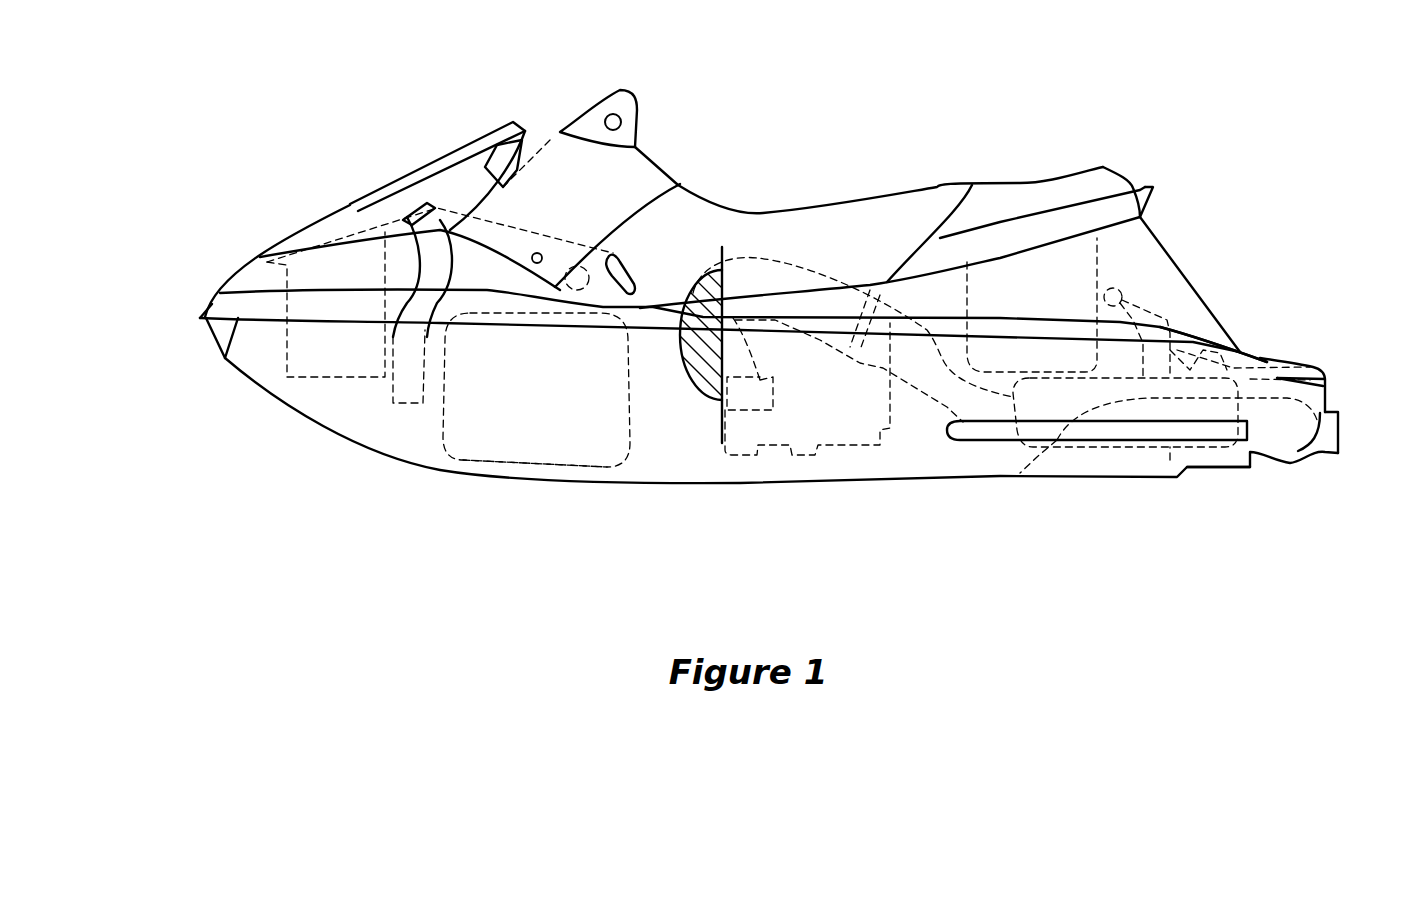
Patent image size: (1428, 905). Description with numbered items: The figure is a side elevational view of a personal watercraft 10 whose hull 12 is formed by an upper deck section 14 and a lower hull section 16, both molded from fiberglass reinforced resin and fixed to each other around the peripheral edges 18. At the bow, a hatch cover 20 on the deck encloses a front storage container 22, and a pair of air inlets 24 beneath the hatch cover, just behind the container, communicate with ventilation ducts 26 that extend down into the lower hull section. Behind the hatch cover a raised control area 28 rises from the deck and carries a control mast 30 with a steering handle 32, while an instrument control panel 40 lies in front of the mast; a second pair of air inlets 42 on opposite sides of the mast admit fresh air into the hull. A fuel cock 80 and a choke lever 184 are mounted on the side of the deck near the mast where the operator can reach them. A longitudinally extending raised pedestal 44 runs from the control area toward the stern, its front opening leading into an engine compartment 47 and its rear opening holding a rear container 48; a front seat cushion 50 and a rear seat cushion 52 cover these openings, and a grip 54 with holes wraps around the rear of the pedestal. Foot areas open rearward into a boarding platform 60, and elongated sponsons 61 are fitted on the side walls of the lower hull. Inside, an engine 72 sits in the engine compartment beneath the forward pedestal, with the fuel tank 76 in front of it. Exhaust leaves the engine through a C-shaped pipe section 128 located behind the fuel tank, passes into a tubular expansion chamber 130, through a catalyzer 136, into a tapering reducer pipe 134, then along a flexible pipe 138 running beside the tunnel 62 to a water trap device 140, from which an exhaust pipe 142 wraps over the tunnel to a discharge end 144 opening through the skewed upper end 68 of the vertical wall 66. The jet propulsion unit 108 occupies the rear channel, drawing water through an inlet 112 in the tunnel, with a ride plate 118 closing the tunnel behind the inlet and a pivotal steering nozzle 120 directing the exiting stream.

The personal watercraft 10 is at (1218, 128).
The hull 12 is at (198, 319).
The upper deck section 14 is at (395, 223).
The lower hull section 16 is at (343, 437).
The peripheral edges 18 is at (248, 310).
The hatch cover 20 is at (455, 173).
The front storage container 22 is at (295, 335).
The air inlets 24 is at (420, 207).
The ventilation ducts 26 is at (427, 373).
The raised control area 28 is at (645, 176).
The control mast 30 is at (625, 88).
The steering handle 32 is at (621, 122).
The instrument control panel 40 is at (520, 123).
The second pair of air inlets 42 is at (617, 294).
The raised pedestal 44 is at (1205, 297).
The engine compartment 47 is at (868, 474).
The rear container 48 is at (1100, 253).
The front seat cushion 50 is at (760, 210).
The rear seat cushion 52 is at (1023, 181).
The grip 54 is at (1142, 187).
The boarding platform 60 is at (1267, 350).
The sponsons 61 is at (962, 433).
The tunnel 62 is at (1040, 450).
The vertical wall 66 is at (1170, 460).
The upper end of channel front wall 68 is at (1218, 346).
The engine 72 is at (722, 427).
The fuel tank 76 is at (538, 470).
The fuel cock 80 is at (567, 292).
The jet propulsion unit 108 is at (1320, 470).
The inlet 112 is at (1080, 477).
The ride plate 118 is at (1133, 450).
The steering nozzle 120 is at (1342, 432).
The C-shaped pipe section 128 is at (683, 371).
The expansion chamber 130 is at (820, 270).
The reducer pipe 134 is at (893, 313).
The catalyzer 136 is at (868, 338).
The flexible pipe 138 is at (947, 405).
The water trap device 140 is at (1232, 460).
The exhaust pipe 142 is at (1123, 290).
The discharge end 144 is at (1215, 322).
The choke lever 184 is at (533, 263).